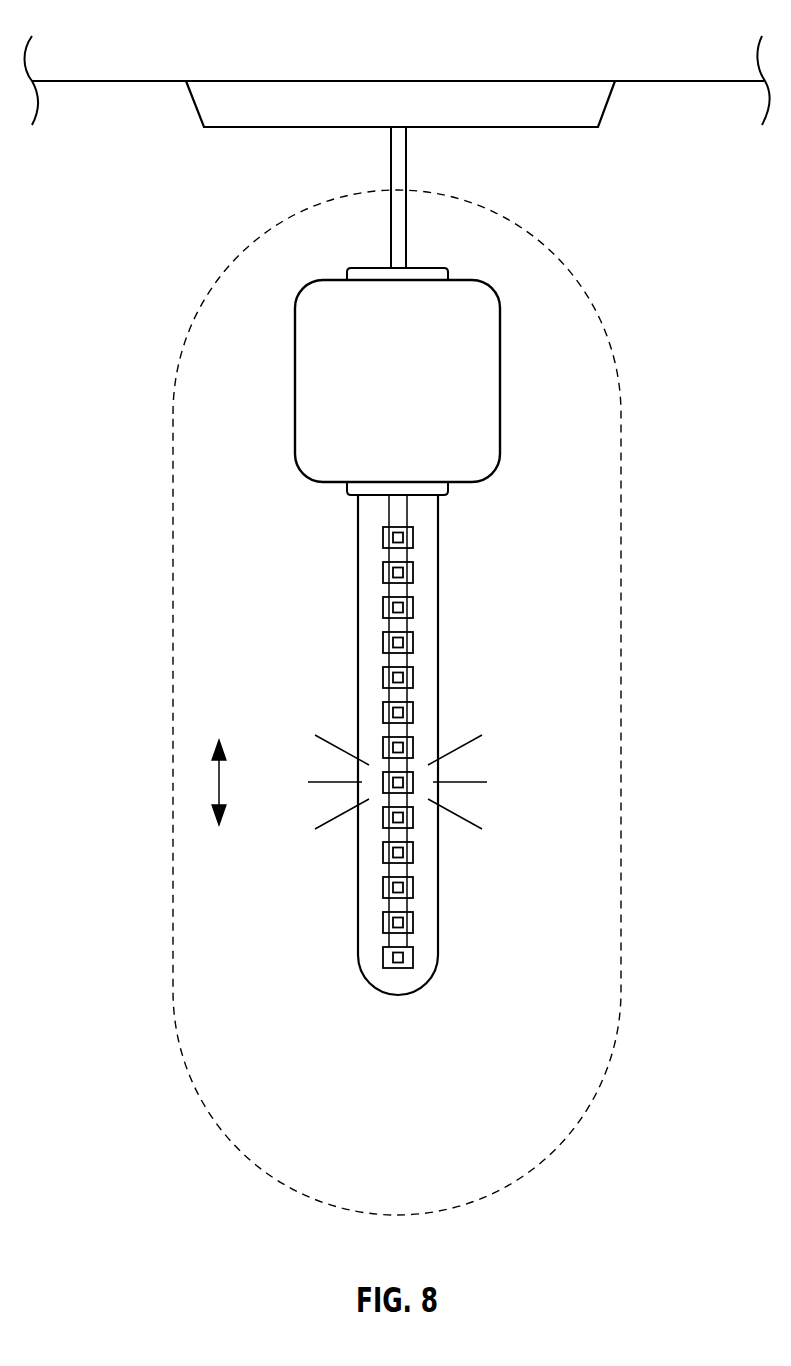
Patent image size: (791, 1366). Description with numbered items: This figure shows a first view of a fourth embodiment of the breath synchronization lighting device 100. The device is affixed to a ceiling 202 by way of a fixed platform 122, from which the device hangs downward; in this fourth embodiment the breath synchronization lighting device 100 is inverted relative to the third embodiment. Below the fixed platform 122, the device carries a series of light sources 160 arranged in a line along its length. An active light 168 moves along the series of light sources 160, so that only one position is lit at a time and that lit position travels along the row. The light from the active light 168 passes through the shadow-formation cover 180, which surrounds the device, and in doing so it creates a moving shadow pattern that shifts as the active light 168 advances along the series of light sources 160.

The ceiling 202 is at (658, 81).
The fixed platform 122 is at (597, 99).
The breath synchronization lighting device 100 is at (524, 561).
The series of light sources 160 is at (397, 601).
The active light 168 is at (397, 776).
The shadow-formation cover 180 is at (558, 1145).